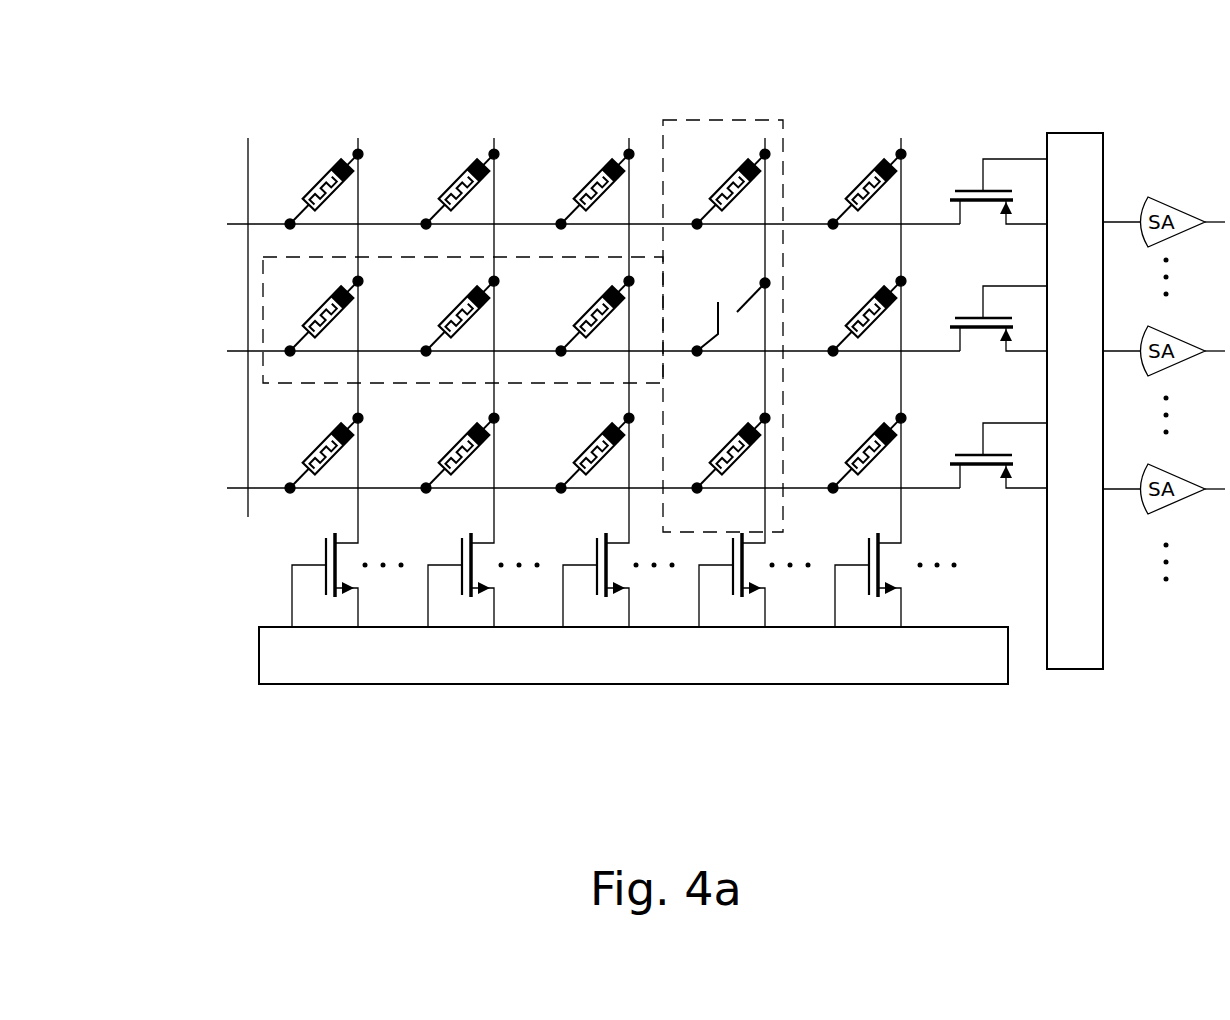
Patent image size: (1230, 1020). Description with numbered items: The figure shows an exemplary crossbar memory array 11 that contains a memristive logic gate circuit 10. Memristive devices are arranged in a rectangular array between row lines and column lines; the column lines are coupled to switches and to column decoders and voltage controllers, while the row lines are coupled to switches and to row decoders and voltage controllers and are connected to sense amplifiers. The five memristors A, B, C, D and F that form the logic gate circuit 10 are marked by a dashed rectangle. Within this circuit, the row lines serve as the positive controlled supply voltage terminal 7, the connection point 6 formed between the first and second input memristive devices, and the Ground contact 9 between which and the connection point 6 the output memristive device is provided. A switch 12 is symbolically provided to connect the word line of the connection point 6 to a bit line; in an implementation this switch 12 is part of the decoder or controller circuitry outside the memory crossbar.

The crossbar memory array 11 is at (172, 117).
The switch 12 is at (738, 280).
The positive controlled supply voltage terminal 7 is at (237, 226).
The connection point 6 is at (230, 352).
The Ground contact 9 is at (233, 487).
The logic gate circuit 10 is at (262, 307).